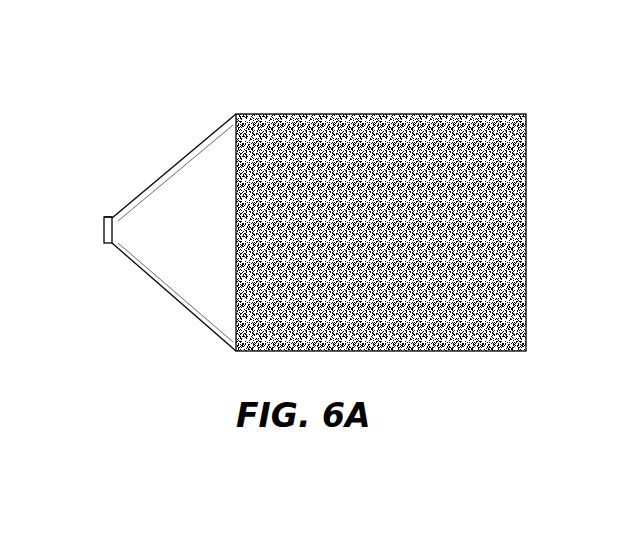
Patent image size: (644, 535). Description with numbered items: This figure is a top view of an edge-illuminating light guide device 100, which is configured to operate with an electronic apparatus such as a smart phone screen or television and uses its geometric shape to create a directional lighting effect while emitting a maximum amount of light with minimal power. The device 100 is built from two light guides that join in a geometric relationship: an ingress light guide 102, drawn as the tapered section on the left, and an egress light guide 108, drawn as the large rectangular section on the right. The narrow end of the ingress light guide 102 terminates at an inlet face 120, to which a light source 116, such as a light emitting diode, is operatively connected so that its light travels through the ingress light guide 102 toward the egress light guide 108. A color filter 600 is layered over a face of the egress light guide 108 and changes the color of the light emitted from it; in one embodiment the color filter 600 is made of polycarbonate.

The edge-illuminating light guide device 100 is at (144, 80).
The egress light guide 108 is at (309, 98).
The color filter 600 is at (381, 232).
The ingress light guide 102 is at (160, 292).
The light source 116 is at (105, 230).
The inlet face 120 is at (112, 215).